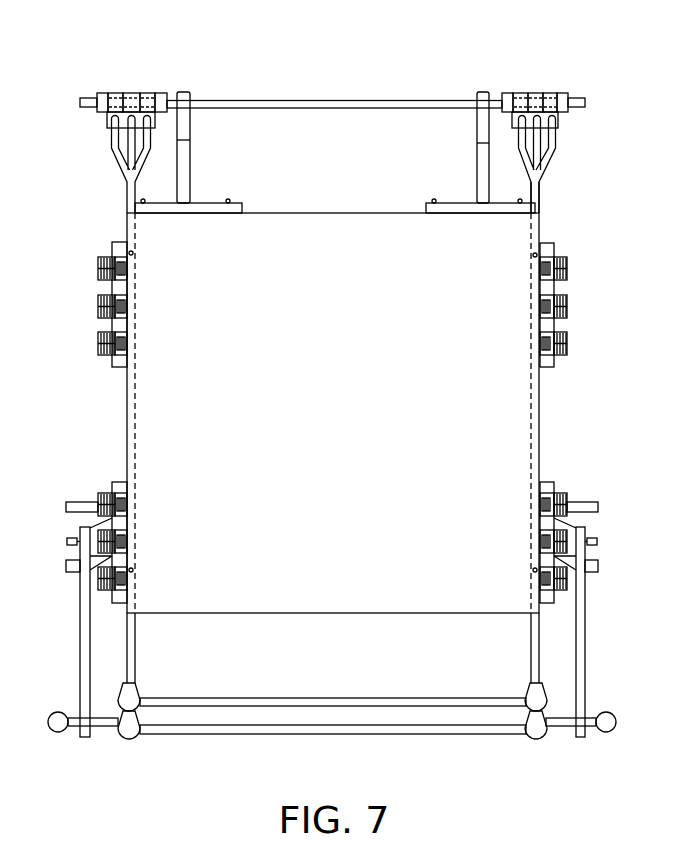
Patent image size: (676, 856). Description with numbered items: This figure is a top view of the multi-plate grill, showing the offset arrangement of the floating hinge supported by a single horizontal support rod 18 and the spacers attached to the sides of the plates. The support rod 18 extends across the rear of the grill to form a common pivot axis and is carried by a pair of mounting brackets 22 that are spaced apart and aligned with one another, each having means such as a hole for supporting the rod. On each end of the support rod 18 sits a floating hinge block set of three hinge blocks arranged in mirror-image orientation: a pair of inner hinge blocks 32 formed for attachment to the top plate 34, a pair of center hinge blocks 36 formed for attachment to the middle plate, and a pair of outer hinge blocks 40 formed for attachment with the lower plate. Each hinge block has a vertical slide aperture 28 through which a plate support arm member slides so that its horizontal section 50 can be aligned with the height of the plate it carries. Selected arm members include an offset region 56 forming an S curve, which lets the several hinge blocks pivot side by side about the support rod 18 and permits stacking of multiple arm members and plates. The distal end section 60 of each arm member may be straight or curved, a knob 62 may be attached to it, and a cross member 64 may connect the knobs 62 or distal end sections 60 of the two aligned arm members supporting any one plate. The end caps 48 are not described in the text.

The support rod 18 is at (345, 100).
The mounting brackets 22 is at (190, 172).
The slide aperture 28 is at (98, 343).
The inner hinge blocks 32 is at (147, 92).
The top plate 34 is at (318, 445).
The center hinge blocks 36 is at (130, 92).
The outer hinge blocks 40 is at (113, 92).
The manifold end caps 48 is at (97, 95).
The horizontal section 50 is at (541, 207).
The offset region 56 is at (518, 155).
The distal end section 60 is at (530, 662).
The knob 62 is at (527, 690).
The cross member 64 is at (332, 698).